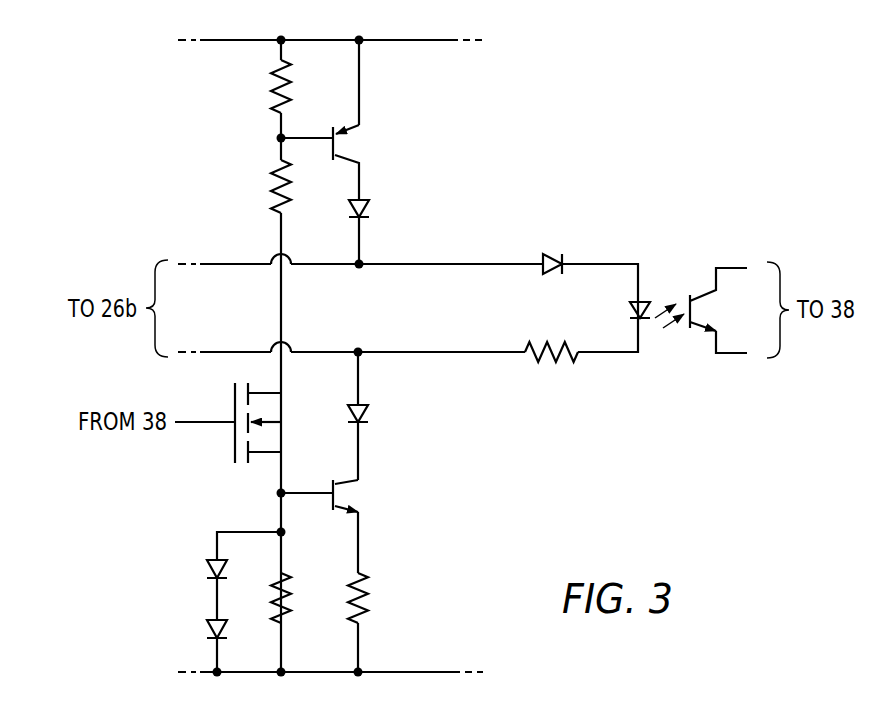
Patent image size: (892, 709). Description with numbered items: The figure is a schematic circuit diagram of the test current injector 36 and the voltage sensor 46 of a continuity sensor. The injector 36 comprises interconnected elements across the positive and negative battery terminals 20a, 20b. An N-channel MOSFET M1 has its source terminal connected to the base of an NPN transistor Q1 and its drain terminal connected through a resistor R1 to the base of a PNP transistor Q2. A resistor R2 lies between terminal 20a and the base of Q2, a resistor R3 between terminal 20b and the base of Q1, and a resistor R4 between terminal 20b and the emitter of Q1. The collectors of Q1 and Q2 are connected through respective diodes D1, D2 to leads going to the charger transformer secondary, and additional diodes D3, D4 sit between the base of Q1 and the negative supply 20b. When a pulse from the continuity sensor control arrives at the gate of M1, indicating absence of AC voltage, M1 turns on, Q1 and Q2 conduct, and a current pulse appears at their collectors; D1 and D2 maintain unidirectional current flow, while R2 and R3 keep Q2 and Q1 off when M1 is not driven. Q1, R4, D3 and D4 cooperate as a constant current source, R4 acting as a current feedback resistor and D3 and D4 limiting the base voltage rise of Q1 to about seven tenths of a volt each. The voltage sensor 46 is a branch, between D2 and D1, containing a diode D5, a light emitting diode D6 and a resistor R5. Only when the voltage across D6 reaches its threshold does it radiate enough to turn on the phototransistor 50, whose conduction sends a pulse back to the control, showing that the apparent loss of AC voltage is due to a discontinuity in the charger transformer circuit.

The positive battery terminal 20a is at (393, 40).
The negative battery terminal 20b is at (412, 672).
The injector 36 is at (331, 241).
The voltage sensor 46 is at (660, 295).
The phototransistor 50 is at (705, 312).
The resistor R1 is at (271, 201).
The resistor R2 is at (271, 86).
The resistor R3 is at (292, 587).
The resistor R4 is at (372, 586).
The resistor R5 is at (565, 360).
The NPN transistor Q1 is at (348, 492).
The PNP transistor Q2 is at (352, 144).
The diode D1 is at (372, 412).
The diode D2 is at (372, 209).
The diode D3 is at (205, 569).
The diode D4 is at (205, 629).
The diode D5 is at (554, 255).
The light emitting diode D6 is at (628, 312).
The N-channel MOSFET M1 is at (275, 418).